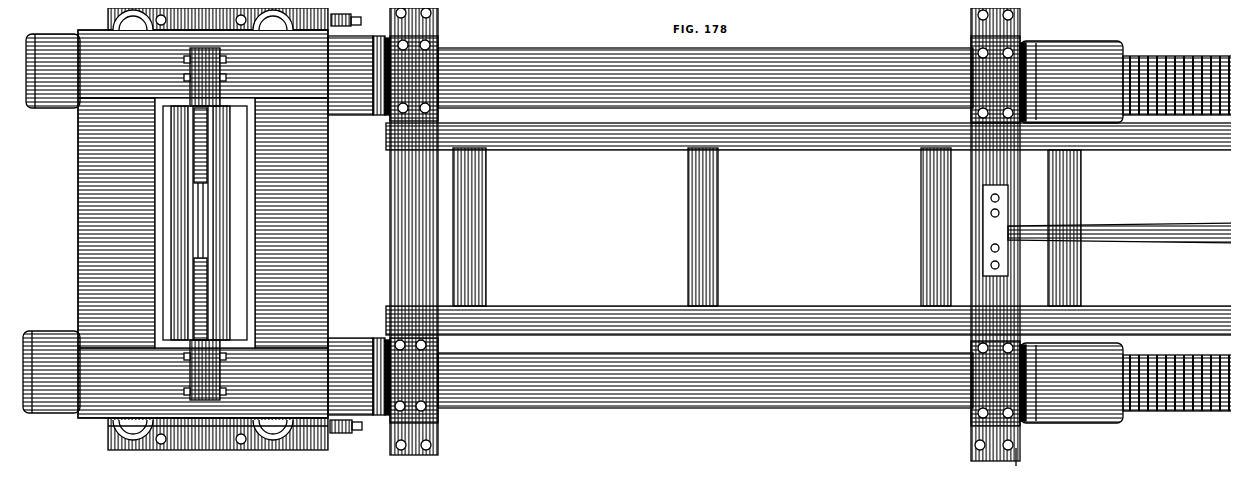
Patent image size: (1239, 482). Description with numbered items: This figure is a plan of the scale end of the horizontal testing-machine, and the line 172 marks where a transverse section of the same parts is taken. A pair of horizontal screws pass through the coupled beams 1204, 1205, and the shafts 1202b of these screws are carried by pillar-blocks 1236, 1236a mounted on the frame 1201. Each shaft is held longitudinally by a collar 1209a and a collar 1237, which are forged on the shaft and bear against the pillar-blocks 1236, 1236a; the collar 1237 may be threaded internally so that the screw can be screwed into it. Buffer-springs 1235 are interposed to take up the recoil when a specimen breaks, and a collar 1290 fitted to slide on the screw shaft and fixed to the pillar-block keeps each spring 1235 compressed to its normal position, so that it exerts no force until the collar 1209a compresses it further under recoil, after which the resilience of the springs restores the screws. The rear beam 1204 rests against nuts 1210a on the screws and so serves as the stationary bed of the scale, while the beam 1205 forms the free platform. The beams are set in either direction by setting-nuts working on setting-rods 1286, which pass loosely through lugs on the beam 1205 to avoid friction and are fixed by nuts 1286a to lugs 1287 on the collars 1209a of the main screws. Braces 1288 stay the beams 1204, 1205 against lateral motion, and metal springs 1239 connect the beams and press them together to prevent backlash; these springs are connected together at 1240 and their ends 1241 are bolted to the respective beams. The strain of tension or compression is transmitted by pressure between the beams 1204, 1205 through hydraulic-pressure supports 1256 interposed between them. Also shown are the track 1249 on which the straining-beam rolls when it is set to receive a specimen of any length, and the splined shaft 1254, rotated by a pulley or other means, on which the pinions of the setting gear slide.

The section line 172 is at (1028, 457).
The frame 1201 is at (735, 234).
The screw shaft 1202b is at (705, 223).
The rear beam 1204 is at (116, 223).
The beam 1205 is at (291, 223).
The collar 1209a is at (350, 225).
The nut 1210a is at (51, 223).
The buffer-spring 1235 is at (721, 229).
The pillar-block 1236 is at (995, 231).
The pillar-block 1236a is at (414, 229).
The collar 1237 is at (1125, 226).
The spring 1239 is at (206, 224).
The spring connection 1240 is at (205, 225).
The spring end 1241 is at (205, 223).
The track 1249 is at (808, 223).
The splined shaft 1254 is at (1119, 228).
The hydraulic-pressure support 1256 is at (200, 224).
The setting-rod 1286 is at (220, 229).
The nut 1286a is at (373, 226).
The lug 1287 is at (350, 227).
The brace 1288 is at (203, 224).
The collar 1290 is at (705, 228).